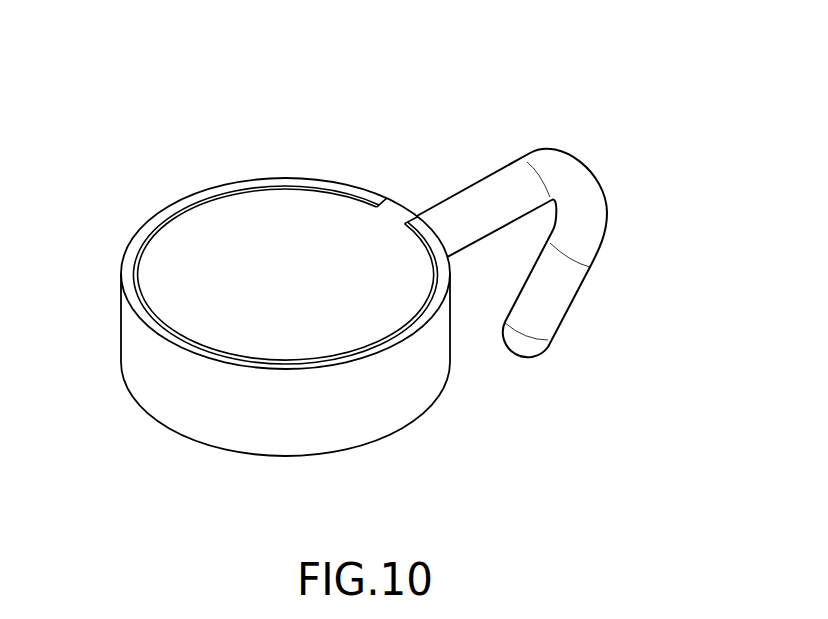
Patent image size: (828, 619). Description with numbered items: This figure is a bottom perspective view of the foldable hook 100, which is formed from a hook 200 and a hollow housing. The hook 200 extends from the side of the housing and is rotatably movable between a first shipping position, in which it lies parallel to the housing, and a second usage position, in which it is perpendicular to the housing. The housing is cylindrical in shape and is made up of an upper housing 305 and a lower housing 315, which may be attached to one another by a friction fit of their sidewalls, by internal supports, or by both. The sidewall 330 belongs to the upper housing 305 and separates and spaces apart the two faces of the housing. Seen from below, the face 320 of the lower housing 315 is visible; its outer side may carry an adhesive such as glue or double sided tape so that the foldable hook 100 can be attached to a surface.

The foldable hook 100 is at (212, 95).
The hook 200 is at (547, 138).
The upper housing 305 is at (285, 415).
The lower housing 315 is at (247, 222).
The face 320 is at (217, 267).
The sidewall 330 is at (205, 403).